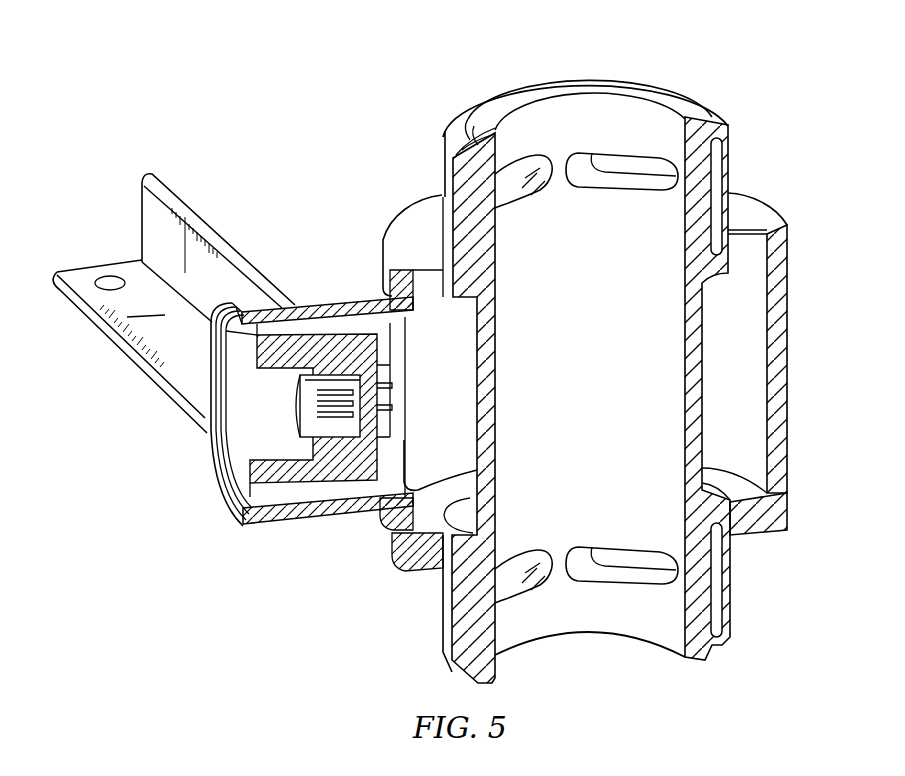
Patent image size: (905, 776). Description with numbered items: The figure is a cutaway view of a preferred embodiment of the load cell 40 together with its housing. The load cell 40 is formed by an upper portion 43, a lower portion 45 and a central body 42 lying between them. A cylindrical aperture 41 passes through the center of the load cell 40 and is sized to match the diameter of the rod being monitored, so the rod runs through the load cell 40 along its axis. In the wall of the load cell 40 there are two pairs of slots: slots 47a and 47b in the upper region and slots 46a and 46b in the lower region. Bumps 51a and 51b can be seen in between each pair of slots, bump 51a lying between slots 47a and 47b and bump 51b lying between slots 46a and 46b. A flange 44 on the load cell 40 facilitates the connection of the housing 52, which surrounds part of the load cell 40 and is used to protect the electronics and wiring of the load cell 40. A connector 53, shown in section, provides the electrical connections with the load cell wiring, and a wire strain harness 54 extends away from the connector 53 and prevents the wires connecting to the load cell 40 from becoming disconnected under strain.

The load cell 40 is at (811, 152).
The cylindrical aperture 41 is at (562, 58).
The central body 42 is at (692, 400).
The upper portion 43 is at (717, 170).
The flange 44 is at (777, 510).
The lower portion 45 is at (717, 577).
The slot 46a is at (633, 557).
The slot 46b is at (518, 577).
The slot 47a is at (638, 162).
The slot 47b is at (523, 183).
The bump 51a is at (555, 167).
The bump 51b is at (560, 565).
The housing 52 is at (790, 343).
The connector 53 is at (300, 412).
The wire strain harness 54 is at (203, 228).